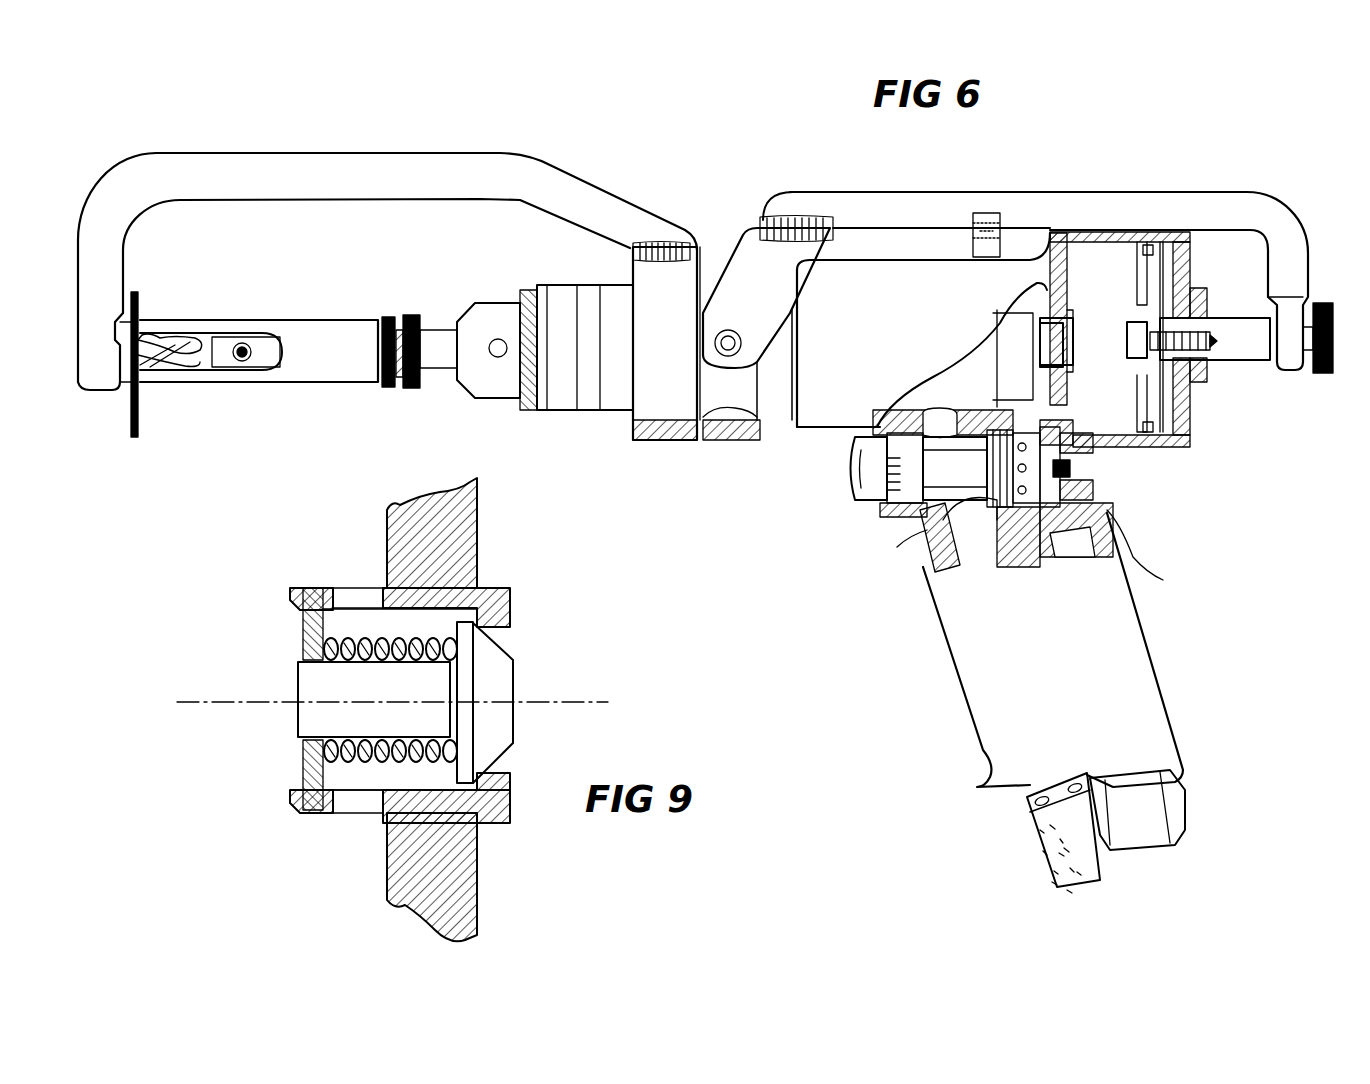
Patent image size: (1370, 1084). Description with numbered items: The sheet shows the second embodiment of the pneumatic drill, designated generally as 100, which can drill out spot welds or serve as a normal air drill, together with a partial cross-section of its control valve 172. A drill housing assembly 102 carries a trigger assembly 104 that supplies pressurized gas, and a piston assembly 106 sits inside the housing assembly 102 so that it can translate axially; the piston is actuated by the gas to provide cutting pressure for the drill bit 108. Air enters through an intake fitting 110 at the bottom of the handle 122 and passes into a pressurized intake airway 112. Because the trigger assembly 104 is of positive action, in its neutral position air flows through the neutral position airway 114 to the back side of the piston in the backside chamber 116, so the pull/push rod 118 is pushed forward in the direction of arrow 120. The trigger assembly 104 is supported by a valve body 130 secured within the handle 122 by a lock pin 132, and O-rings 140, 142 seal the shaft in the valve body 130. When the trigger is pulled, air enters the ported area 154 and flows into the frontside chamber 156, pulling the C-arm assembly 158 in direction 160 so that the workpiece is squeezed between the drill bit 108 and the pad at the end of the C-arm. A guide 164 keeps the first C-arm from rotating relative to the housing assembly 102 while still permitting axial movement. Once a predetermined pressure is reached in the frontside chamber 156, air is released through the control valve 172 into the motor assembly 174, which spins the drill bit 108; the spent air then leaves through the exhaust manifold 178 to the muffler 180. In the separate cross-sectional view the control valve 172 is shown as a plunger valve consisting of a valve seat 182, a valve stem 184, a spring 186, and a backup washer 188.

In FIG. 6, the second embodiment 100 is at (810, 525).
In FIG. 6, the drill housing assembly 102 is at (905, 255).
In FIG. 6, the trigger assembly 104 is at (850, 478).
In FIG. 6, the piston assembly 106 is at (1128, 272).
In FIG. 6, the drill bit 108 is at (176, 330).
In FIG. 6, the intake fitting 110 is at (1200, 790).
In FIG. 6, the pressurized intake airway 112 is at (1163, 580).
In FIG. 6, the neutral position airway 114 is at (1100, 467).
In FIG. 6, the backside chamber 116 is at (1190, 250).
In FIG. 6, the pull/push rod 118 is at (1240, 370).
In FIG. 6, the arrow 120 is at (795, 180).
In FIG. 6, the handle 122 is at (1157, 650).
In FIG. 6, the valve body 130 is at (870, 470).
In FIG. 6, the lock pin 132 is at (987, 557).
In FIG. 6, the O-ring 140 is at (892, 563).
In FIG. 6, the O-ring 142 is at (1027, 563).
In FIG. 6, the ported area 154 is at (1000, 482).
In FIG. 6, the frontside chamber 156 is at (1123, 337).
In FIG. 6, the C-arm assembly 158 is at (604, 180).
In FIG. 6, the direction 160 is at (1108, 180).
In FIG. 6, the guide 164 is at (953, 262).
In FIG. 6, the control valve 172 is at (1060, 345).
In FIG. 9, the control valve 172 is at (254, 812).
In FIG. 6, the motor assembly 174 is at (1045, 292).
In FIG. 6, the exhaust manifold 178 is at (960, 535).
In FIG. 6, the muffler 180 is at (1040, 855).
In FIG. 9, the valve seat 182 is at (509, 596).
In FIG. 9, the valve stem 184 is at (503, 641).
In FIG. 9, the spring 186 is at (301, 773).
In FIG. 9, the backup washer 188 is at (301, 626).